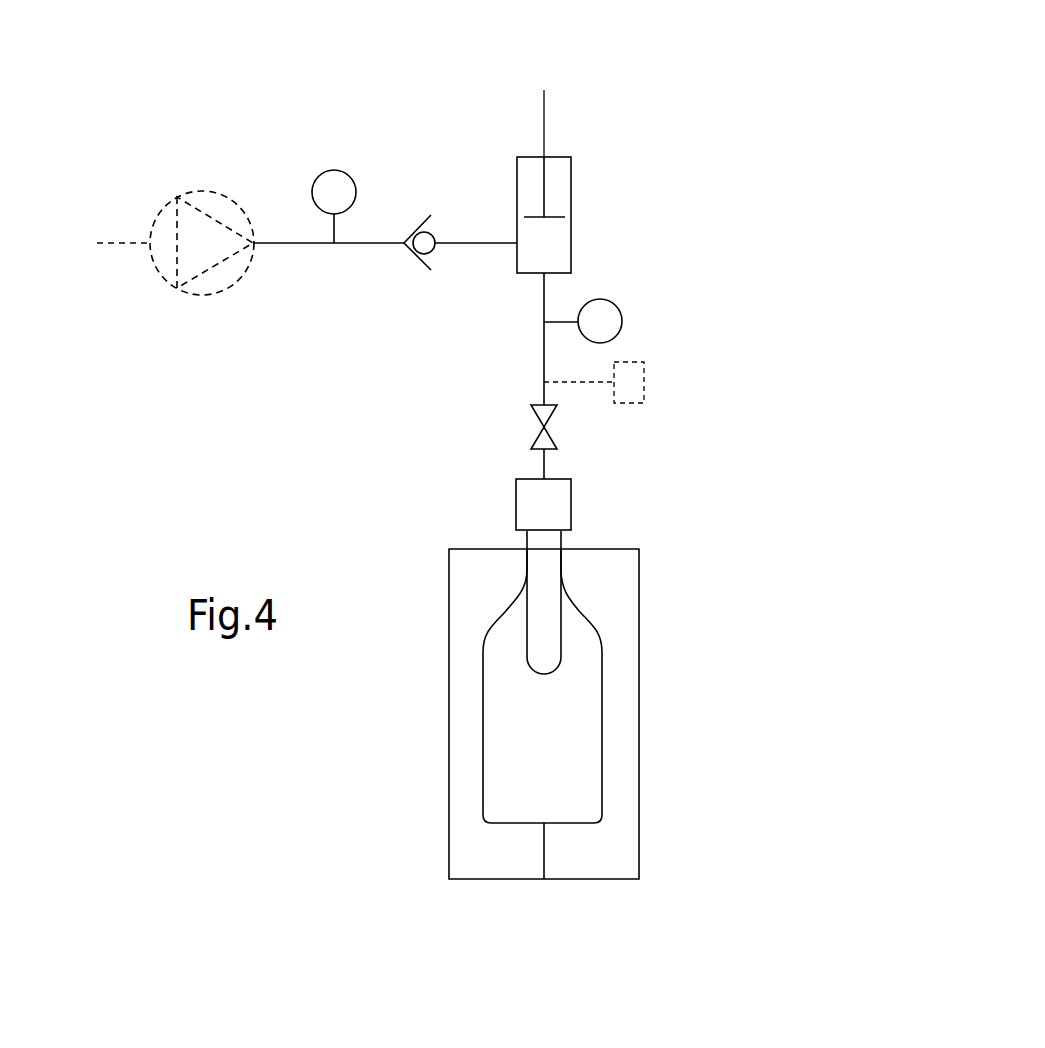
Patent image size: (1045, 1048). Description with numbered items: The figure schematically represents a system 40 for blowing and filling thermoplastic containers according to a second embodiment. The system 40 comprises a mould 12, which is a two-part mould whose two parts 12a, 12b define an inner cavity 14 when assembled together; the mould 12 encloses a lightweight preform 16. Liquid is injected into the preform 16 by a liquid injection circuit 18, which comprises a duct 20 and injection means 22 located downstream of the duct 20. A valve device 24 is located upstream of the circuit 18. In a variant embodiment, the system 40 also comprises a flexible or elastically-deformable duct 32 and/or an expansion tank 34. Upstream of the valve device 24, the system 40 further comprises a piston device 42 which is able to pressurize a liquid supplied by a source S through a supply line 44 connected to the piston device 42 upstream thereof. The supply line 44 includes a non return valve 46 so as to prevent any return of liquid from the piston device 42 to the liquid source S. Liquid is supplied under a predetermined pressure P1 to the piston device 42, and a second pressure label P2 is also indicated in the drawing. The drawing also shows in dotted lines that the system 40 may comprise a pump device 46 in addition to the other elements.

The system 40 is at (683, 119).
The liquid source S is at (111, 244).
The non return valve 46 is at (213, 302).
The supply line 44 is at (366, 246).
The predetermined pressure P1 is at (334, 206).
The piston device 42 is at (602, 233).
The pressure gauge P2 is at (583, 321).
The flexible or elastically-deformable duct 32 is at (544, 360).
The expansion tank 34 is at (644, 375).
The valve device 24 is at (533, 417).
The liquid injection circuit 18 is at (505, 461).
The duct 20 is at (544, 462).
The injection means 22 is at (571, 503).
The lightweight preform 16 is at (548, 640).
The inner cavity 14 is at (497, 702).
The mould 12 is at (677, 803).
The mould part 12a is at (457, 748).
The mould part 12b is at (625, 719).